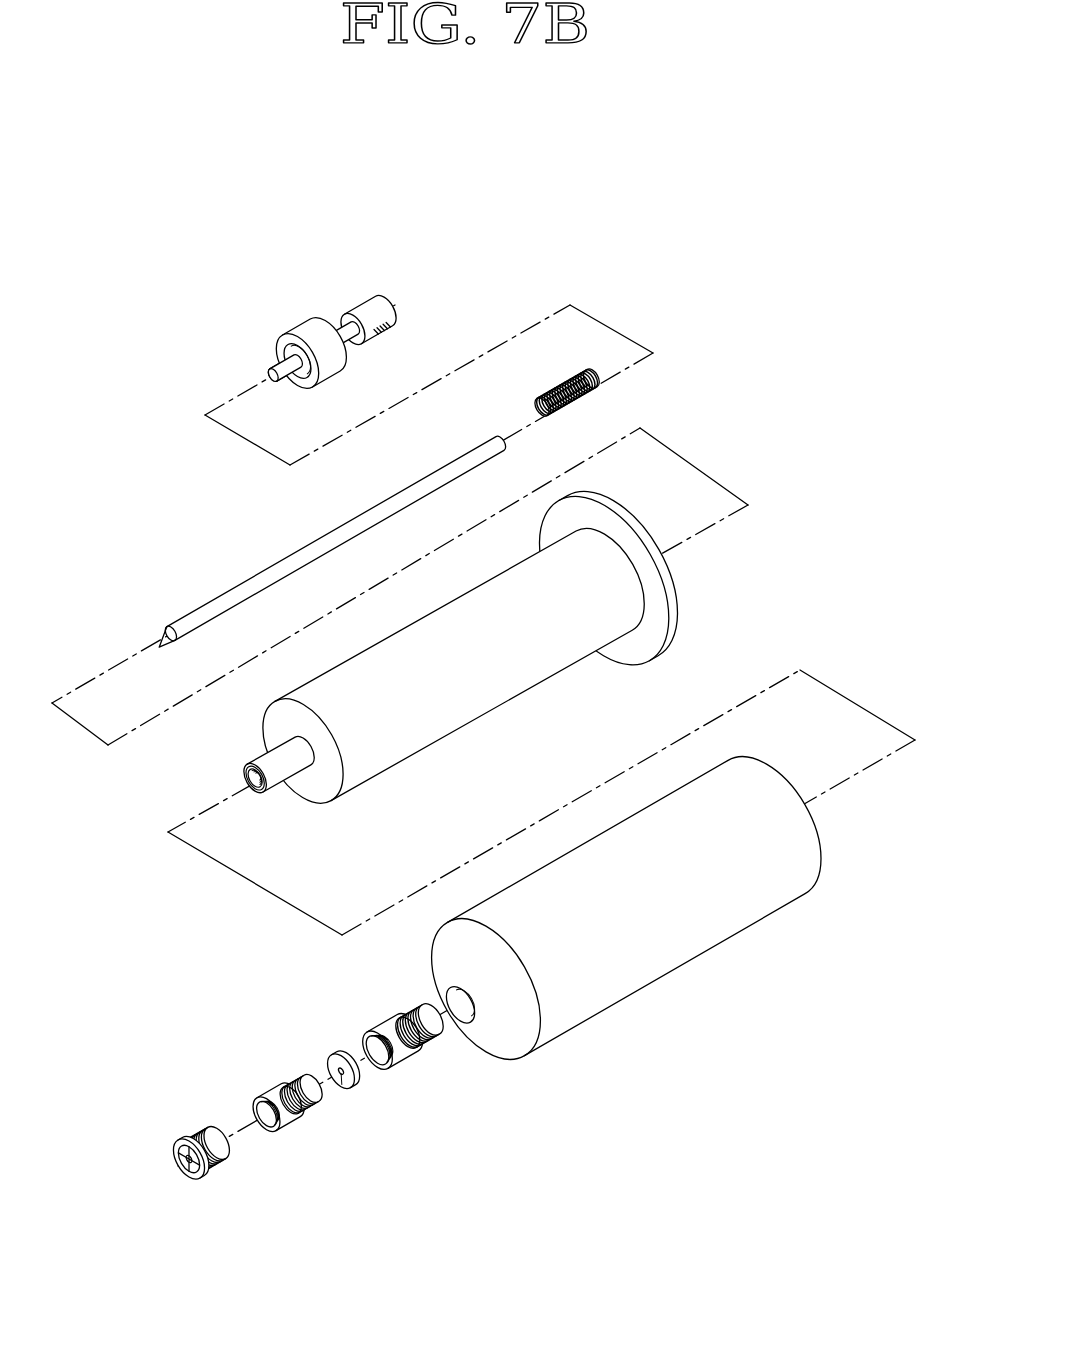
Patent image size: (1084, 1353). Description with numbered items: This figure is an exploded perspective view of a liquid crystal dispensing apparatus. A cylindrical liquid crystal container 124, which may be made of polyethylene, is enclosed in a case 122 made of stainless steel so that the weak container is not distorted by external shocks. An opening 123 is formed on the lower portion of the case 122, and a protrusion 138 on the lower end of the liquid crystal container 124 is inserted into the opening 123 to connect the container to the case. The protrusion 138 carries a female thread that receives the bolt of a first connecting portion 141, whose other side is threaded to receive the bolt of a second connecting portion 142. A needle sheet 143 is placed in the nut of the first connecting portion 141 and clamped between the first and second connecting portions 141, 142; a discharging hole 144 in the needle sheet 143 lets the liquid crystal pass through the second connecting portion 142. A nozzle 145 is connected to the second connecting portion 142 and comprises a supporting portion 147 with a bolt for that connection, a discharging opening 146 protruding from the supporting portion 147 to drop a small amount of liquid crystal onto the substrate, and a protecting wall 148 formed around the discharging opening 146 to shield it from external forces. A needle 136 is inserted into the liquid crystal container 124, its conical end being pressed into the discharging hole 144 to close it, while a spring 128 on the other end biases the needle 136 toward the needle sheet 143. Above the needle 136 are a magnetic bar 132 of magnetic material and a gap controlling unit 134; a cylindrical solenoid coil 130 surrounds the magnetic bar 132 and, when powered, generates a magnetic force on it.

The case 122 is at (667, 927).
The opening 123 is at (455, 1014).
The liquid crystal container 124 is at (537, 653).
The spring 128 is at (550, 396).
The solenoid coil 130 is at (308, 330).
The magnetic bar 132 is at (272, 314).
The gap controlling unit 134 is at (362, 303).
The needle 136 is at (205, 607).
The protrusion 138 is at (283, 773).
The first connecting portion 141 is at (400, 1055).
The second connecting portion 142 is at (295, 1118).
The needle sheet 143 is at (353, 1093).
The discharging hole 144 is at (337, 1063).
The nozzle 145 is at (172, 1158).
The discharging opening 146 is at (178, 1173).
The supporting portion 147 is at (217, 1167).
The protecting wall 148 is at (186, 1158).